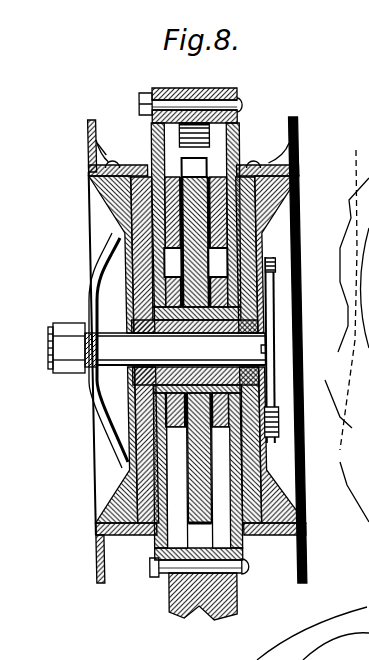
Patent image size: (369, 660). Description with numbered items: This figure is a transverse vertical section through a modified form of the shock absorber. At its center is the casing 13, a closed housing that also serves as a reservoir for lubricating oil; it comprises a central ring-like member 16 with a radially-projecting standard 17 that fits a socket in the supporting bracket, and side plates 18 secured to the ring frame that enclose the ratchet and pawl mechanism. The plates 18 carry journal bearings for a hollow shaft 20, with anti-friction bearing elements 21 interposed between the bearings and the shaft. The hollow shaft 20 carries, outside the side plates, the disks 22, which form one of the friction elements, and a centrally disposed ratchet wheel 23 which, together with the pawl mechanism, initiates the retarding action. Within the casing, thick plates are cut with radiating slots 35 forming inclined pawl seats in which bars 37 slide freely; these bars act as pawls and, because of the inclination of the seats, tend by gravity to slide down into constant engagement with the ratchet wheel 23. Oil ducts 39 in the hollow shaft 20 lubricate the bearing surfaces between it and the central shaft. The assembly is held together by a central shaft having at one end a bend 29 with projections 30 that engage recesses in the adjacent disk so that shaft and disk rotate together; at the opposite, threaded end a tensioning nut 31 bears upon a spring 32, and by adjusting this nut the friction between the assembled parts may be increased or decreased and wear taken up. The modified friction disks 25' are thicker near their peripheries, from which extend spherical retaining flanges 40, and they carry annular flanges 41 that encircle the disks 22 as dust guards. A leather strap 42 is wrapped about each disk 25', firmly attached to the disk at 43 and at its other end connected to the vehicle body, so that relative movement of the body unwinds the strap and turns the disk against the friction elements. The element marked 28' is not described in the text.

The casing 13 is at (194, 82).
The central ring-like member 16 is at (222, 91).
The radially-projecting standard 17 is at (236, 594).
The plates 18 is at (152, 91).
The hollow shaft 20 is at (263, 338).
The anti-friction bearing elements 21 is at (107, 397).
The disks 22 is at (127, 233).
The ratchet wheel 23 is at (264, 226).
The disks 25' is at (188, 349).
The threaded stud 28' is at (33, 361).
The bend 29 is at (276, 415).
The projections 30 is at (270, 283).
The tensioning nut 31 is at (60, 329).
The spring 32 is at (92, 305).
The slots 35 is at (152, 112).
The bars 37 is at (240, 128).
The oil ducts 39 is at (227, 388).
The spherical retaining flanges 40 is at (88, 146).
The annular flanges 41 is at (139, 168).
The strap 42 is at (90, 166).
The strap attachment 43 is at (88, 126).